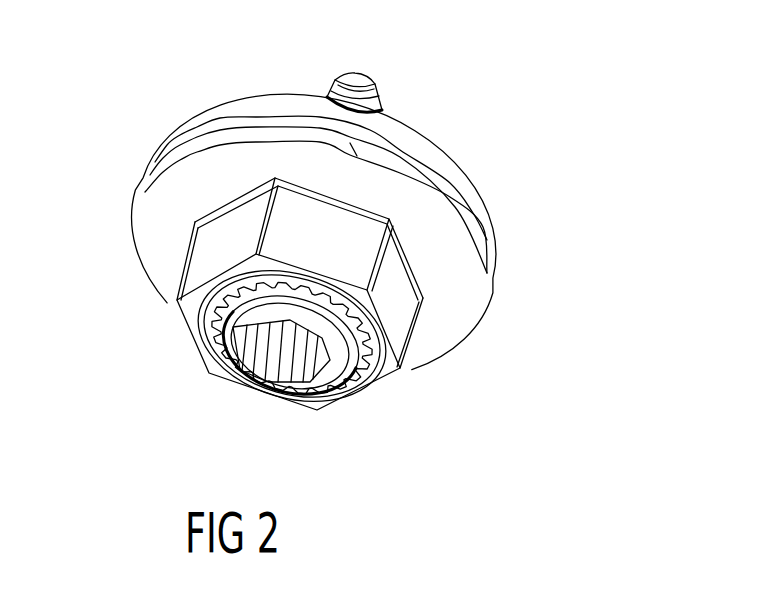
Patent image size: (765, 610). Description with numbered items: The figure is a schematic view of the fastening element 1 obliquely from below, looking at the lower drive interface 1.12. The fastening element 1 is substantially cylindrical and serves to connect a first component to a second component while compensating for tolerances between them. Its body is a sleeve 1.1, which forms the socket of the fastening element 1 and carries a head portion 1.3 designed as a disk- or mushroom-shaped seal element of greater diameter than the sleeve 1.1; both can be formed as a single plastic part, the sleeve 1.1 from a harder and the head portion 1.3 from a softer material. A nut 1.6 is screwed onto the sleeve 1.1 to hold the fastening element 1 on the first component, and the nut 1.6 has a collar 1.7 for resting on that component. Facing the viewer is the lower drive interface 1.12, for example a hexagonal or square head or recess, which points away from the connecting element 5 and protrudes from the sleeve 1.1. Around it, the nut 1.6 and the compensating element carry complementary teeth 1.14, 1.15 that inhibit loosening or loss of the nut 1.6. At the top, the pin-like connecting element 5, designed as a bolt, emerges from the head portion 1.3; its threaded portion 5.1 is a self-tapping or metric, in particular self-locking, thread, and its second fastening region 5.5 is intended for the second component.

The fastening element 1 is at (360, 241).
The sleeve 1.1 is at (392, 232).
The head portion 1.3 is at (314, 232).
The nut 1.6 is at (397, 338).
The collar 1.7 is at (467, 237).
The lower drive interface 1.12 is at (307, 377).
The teeth 1.14 is at (207, 290).
The teeth 1.15 is at (207, 318).
The connecting element 5 is at (423, 84).
The second fastening region 5.5 is at (370, 95).
The threaded portion 5.1 is at (330, 93).